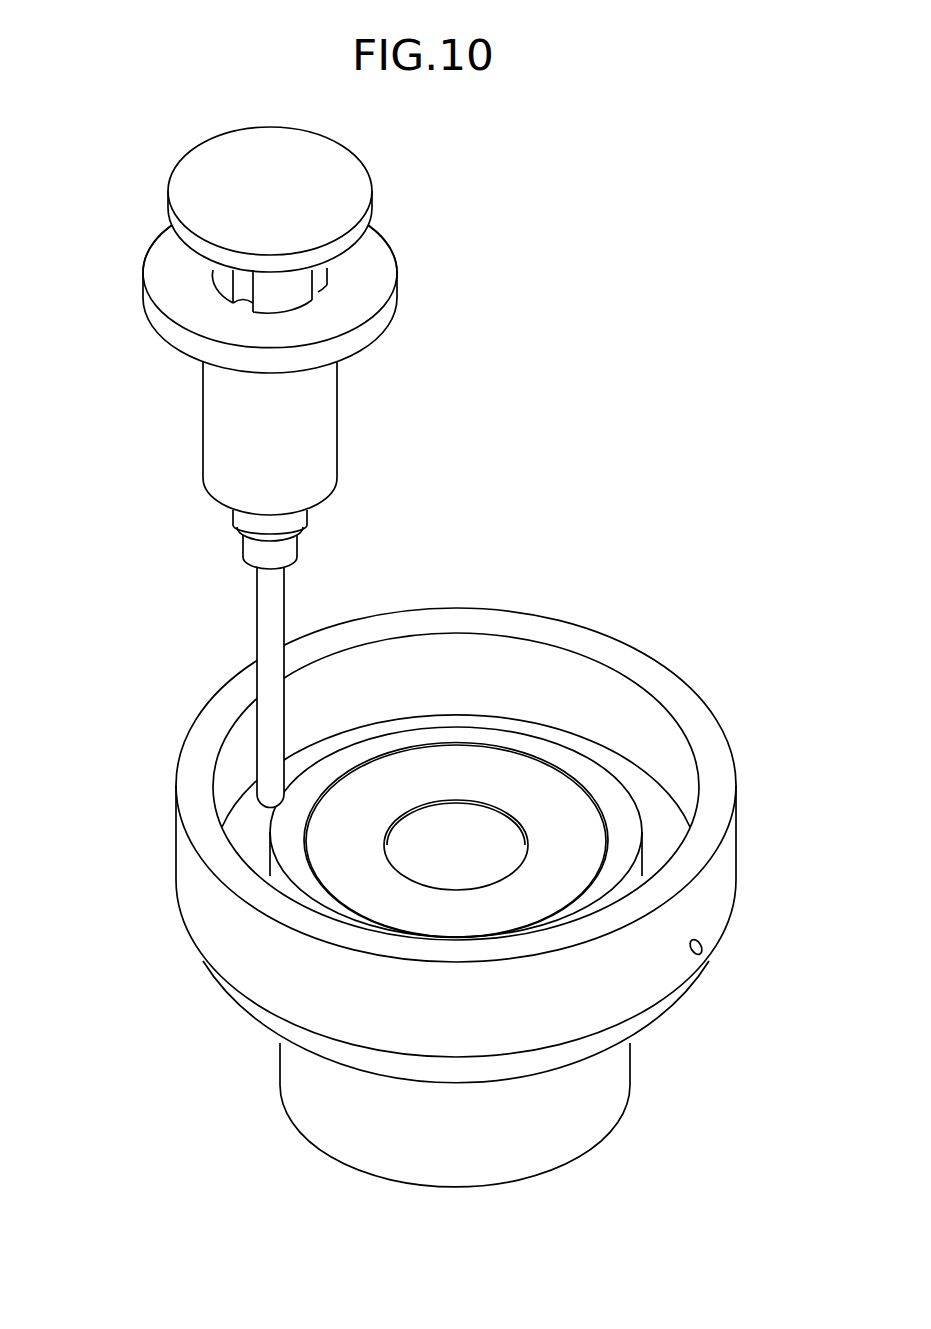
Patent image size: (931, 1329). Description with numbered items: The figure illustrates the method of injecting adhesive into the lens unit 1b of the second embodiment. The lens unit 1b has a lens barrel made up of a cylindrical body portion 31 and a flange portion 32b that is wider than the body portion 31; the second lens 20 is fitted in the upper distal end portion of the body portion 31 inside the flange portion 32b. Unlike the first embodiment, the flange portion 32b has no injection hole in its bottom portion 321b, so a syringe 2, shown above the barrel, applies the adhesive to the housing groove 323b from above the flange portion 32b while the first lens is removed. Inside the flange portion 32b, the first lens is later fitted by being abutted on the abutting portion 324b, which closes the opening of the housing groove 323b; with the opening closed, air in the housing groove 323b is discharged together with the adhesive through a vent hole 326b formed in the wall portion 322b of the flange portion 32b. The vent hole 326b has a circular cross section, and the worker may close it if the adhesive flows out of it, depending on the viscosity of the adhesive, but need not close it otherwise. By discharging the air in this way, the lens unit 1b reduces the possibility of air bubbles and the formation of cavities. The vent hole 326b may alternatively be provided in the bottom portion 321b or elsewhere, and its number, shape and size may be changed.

The lens unit 1b is at (436, 849).
The syringe 2 is at (143, 300).
The second lens 20 is at (407, 775).
The body portion 31 is at (318, 1122).
The flange portion 32b is at (436, 839).
The bottom portion 321b is at (253, 1013).
The wall portion 322b is at (177, 878).
The housing groove 323b is at (636, 780).
The abutting portion 324b is at (537, 750).
The vent hole 326b is at (703, 950).